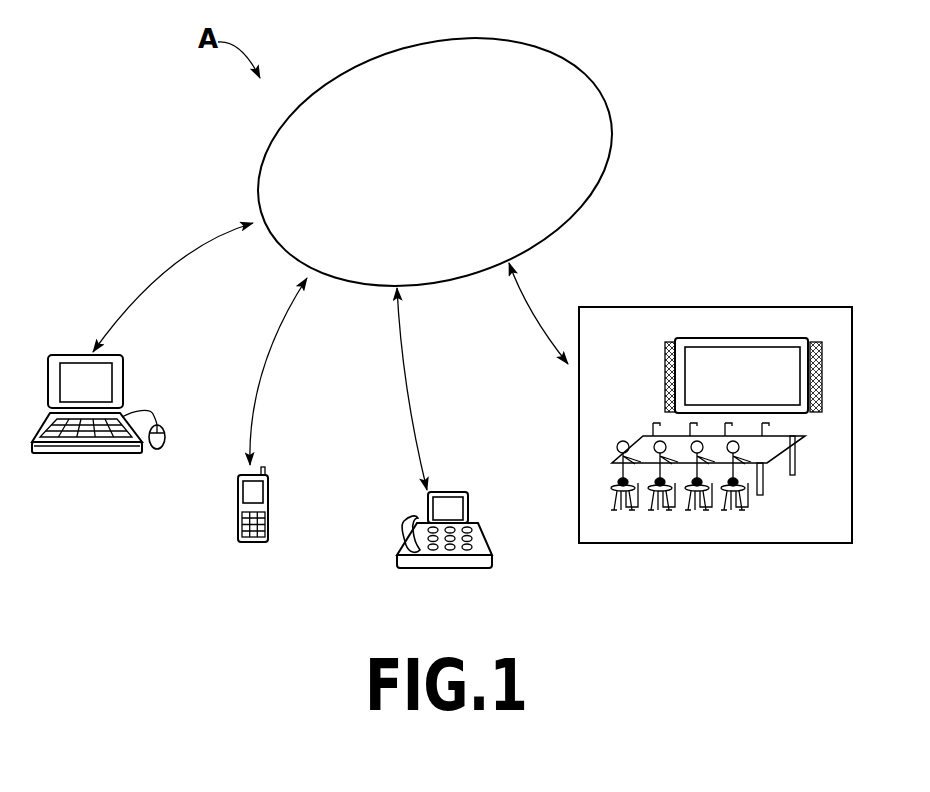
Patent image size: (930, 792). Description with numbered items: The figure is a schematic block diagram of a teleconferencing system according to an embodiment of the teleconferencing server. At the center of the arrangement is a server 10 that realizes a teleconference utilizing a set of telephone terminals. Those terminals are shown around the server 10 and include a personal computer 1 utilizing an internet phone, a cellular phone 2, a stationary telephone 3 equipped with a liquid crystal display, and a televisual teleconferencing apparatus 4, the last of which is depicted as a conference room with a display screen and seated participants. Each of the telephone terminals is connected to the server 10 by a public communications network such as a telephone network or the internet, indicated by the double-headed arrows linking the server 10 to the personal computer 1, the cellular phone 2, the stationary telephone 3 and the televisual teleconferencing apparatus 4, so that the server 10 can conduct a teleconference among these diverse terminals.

The server 10 is at (583, 65).
The personal computer 1 is at (62, 453).
The cellular phone 2 is at (270, 515).
The stationary telephone 3 is at (487, 537).
The televisual teleconferencing apparatus 4 is at (770, 307).